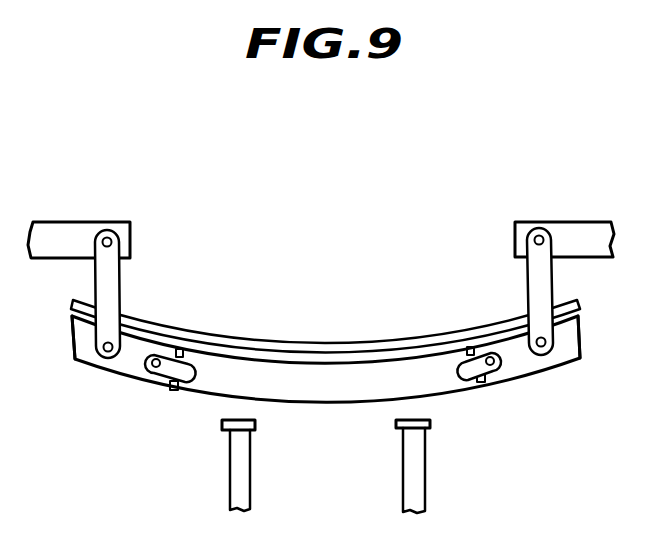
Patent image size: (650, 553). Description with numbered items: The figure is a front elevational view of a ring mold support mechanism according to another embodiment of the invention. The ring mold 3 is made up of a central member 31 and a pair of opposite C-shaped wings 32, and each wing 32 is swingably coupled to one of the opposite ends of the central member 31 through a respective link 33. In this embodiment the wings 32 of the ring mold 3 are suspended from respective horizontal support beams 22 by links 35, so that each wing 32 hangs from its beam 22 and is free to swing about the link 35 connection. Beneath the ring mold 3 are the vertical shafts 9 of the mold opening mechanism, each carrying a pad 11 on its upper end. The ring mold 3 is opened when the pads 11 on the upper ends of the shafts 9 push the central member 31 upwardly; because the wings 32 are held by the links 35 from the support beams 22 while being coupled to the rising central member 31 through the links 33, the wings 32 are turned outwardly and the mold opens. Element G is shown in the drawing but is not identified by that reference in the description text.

The ring mold 3 is at (314, 414).
The vertical shafts 9 is at (238, 478).
The pads 11 is at (220, 426).
The horizontal support beams 22 is at (72, 231).
The central member 31 is at (326, 380).
The wings 32 is at (108, 366).
The links 33 is at (155, 380).
The links 35 is at (110, 294).
The guide rail G is at (268, 347).